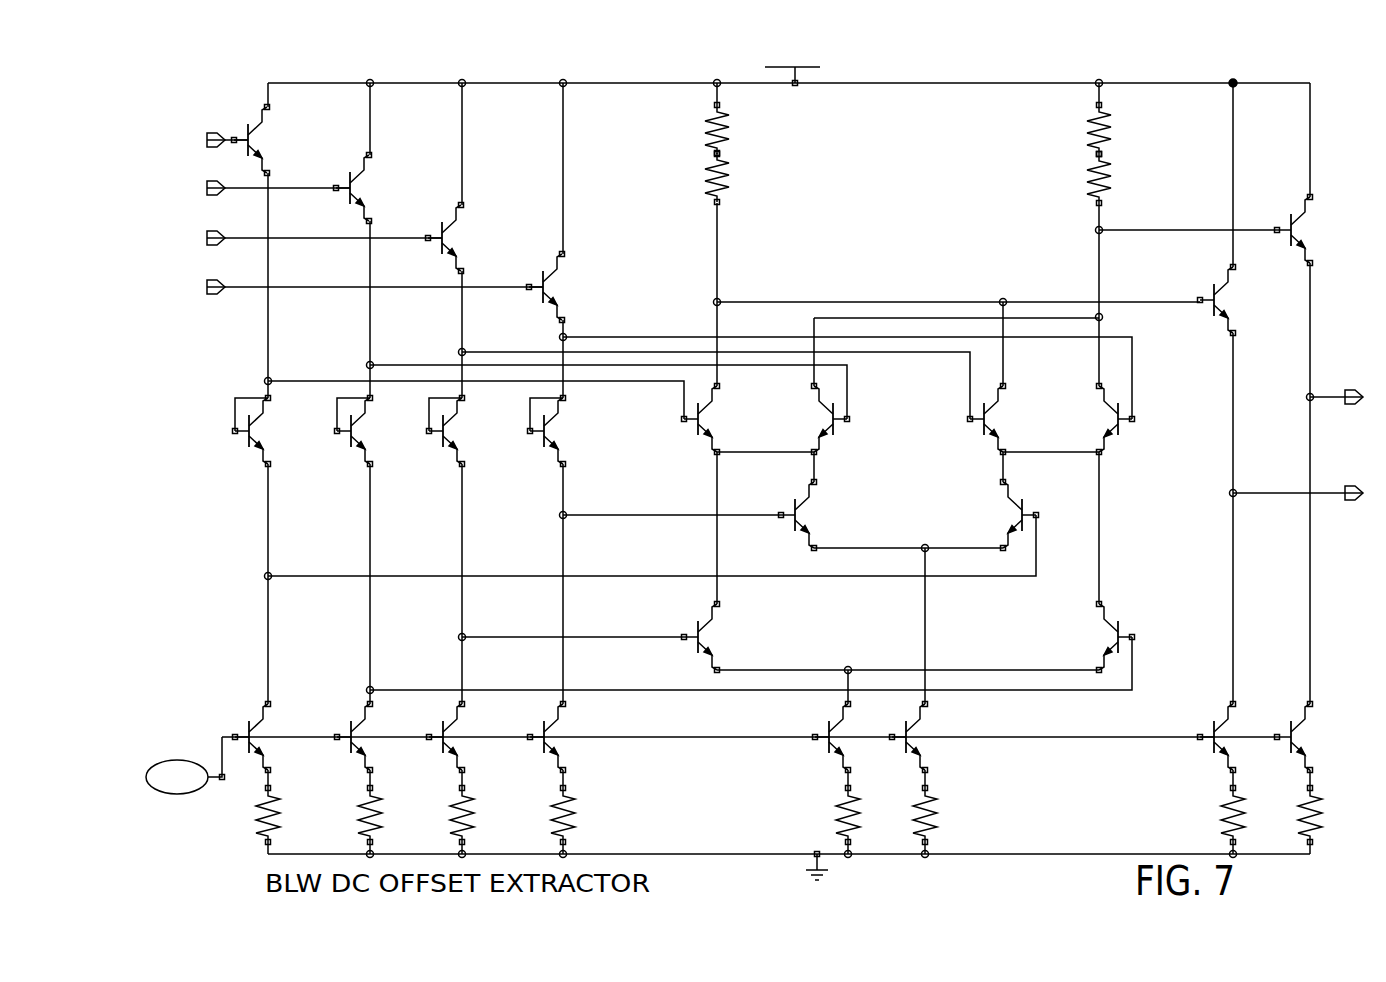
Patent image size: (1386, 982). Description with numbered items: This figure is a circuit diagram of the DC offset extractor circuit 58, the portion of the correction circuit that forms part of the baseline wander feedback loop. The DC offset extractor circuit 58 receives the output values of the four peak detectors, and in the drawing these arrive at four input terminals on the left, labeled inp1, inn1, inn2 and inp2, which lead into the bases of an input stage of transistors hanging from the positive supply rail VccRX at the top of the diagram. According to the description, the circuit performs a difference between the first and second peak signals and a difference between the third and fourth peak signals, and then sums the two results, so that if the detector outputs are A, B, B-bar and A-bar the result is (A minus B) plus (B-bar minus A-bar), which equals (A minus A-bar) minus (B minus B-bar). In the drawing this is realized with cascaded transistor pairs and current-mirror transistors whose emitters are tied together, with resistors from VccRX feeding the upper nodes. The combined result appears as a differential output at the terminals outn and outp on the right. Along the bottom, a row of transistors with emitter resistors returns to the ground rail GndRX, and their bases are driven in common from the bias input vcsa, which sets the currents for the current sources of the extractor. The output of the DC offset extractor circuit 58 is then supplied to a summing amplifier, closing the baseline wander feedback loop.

The DC offset extractor circuit 58 is at (891, 218).
The input terminal inp1 is at (197, 141).
The input terminal inn1 is at (248, 189).
The input terminal inn2 is at (294, 239).
The input terminal inp2 is at (344, 288).
The output terminal outn is at (1335, 409).
The output terminal outp is at (1297, 480).
The current source bias input vcsa is at (185, 765).
The supply voltage VccRX is at (793, 60).
The ground GndRX is at (831, 879).